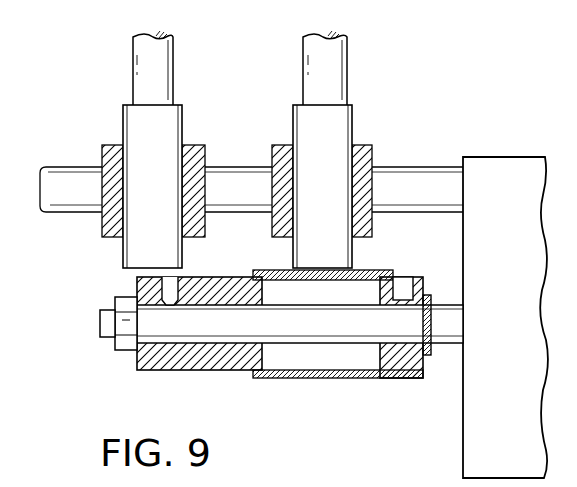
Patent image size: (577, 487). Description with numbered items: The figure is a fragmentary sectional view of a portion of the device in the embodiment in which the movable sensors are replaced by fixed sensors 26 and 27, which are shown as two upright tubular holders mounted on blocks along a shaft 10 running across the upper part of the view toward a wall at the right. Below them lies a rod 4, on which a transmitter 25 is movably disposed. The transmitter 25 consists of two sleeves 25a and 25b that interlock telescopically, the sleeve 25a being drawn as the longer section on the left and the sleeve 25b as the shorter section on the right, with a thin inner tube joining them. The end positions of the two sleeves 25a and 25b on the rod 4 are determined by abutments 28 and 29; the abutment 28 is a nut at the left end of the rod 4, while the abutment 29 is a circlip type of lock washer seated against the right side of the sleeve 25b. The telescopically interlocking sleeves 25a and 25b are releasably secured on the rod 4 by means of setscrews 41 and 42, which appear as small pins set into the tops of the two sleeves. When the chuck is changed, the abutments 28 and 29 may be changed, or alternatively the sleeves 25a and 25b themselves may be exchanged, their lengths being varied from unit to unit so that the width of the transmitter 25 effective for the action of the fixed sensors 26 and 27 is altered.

The rod 4 is at (452, 338).
The shaft 10 is at (424, 177).
The transmitter 25 is at (307, 377).
The sleeve 25a is at (195, 372).
The sleeve 25b is at (400, 372).
The fixed sensor 26 is at (165, 127).
The fixed sensor 27 is at (338, 127).
The abutment 28 is at (117, 347).
The abutment 29 is at (429, 298).
The setscrew 41 is at (403, 283).
The setscrew 42 is at (182, 273).